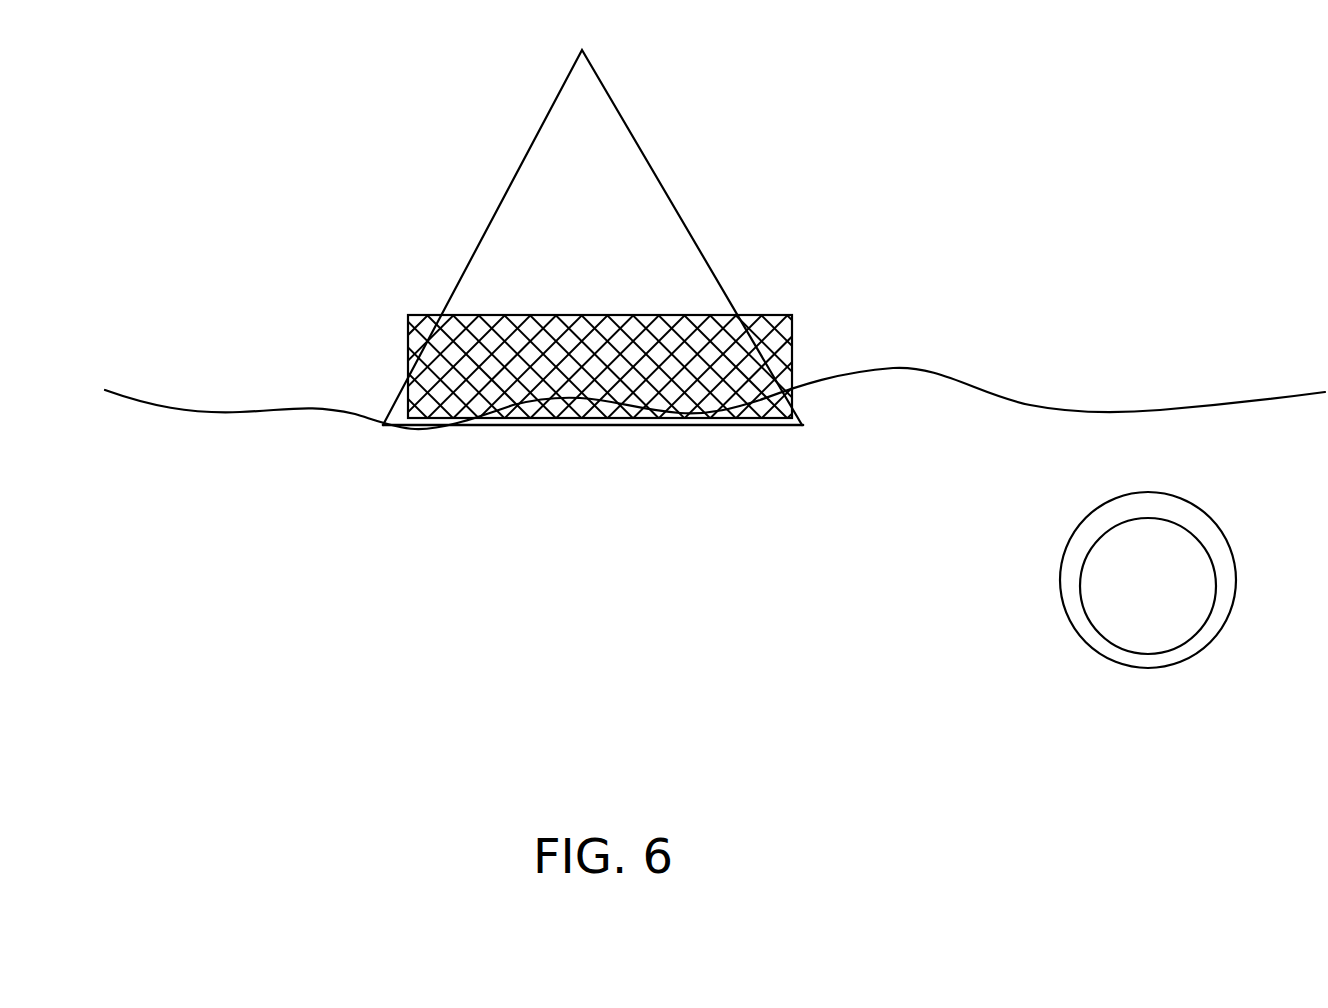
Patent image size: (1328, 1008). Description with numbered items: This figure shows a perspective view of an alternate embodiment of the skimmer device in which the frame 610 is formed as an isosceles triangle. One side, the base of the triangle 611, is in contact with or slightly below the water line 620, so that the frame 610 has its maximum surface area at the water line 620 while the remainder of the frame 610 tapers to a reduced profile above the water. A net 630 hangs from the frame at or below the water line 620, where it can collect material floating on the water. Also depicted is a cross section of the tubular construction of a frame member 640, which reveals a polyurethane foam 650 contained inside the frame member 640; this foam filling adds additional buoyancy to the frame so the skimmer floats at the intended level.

The frame 610 is at (628, 152).
The base of the triangle 611 is at (510, 427).
The water line 620 is at (148, 404).
The net 630 is at (767, 317).
The frame member 640 is at (1067, 548).
The polyurethane foam 650 is at (1155, 608).